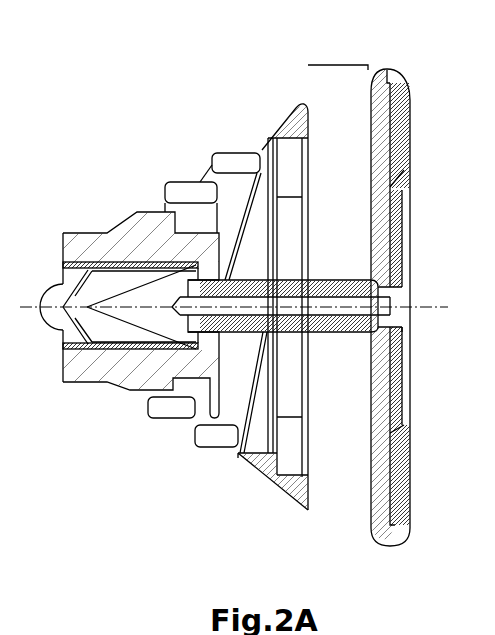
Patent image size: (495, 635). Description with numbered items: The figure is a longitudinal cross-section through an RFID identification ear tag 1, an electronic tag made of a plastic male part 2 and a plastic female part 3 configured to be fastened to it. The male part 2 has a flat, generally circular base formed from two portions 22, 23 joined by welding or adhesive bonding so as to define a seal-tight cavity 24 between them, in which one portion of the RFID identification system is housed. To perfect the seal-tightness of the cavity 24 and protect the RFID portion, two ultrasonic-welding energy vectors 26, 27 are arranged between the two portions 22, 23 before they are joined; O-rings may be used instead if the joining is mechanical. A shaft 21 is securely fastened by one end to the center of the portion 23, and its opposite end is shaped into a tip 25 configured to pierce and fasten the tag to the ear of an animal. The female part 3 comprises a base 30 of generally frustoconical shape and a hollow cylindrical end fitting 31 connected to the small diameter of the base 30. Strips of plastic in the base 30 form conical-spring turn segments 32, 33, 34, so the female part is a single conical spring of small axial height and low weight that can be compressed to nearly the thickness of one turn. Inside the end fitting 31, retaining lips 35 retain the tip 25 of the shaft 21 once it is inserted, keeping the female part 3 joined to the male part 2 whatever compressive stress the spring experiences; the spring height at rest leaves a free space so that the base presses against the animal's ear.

The RFID identification ear tag 1 is at (240, 290).
The male part 2 is at (395, 279).
The female part 3 is at (174, 319).
The shaft 21 is at (323, 333).
The portion 22 is at (368, 517).
The portion 23 is at (408, 167).
The seal-tight cavity 24 is at (400, 478).
The tip 25 is at (92, 262).
The ultrasonic-welding energy vector 26 is at (408, 253).
The ultrasonic-welding energy vector 27 is at (390, 83).
The base 30 is at (222, 448).
The cylindrical end fitting 31 is at (140, 217).
The conical-spring turn segment 32 is at (194, 181).
The conical-spring turn segment 33 is at (238, 152).
The conical-spring turn segment 34 is at (258, 462).
The retaining lips 35 is at (163, 419).